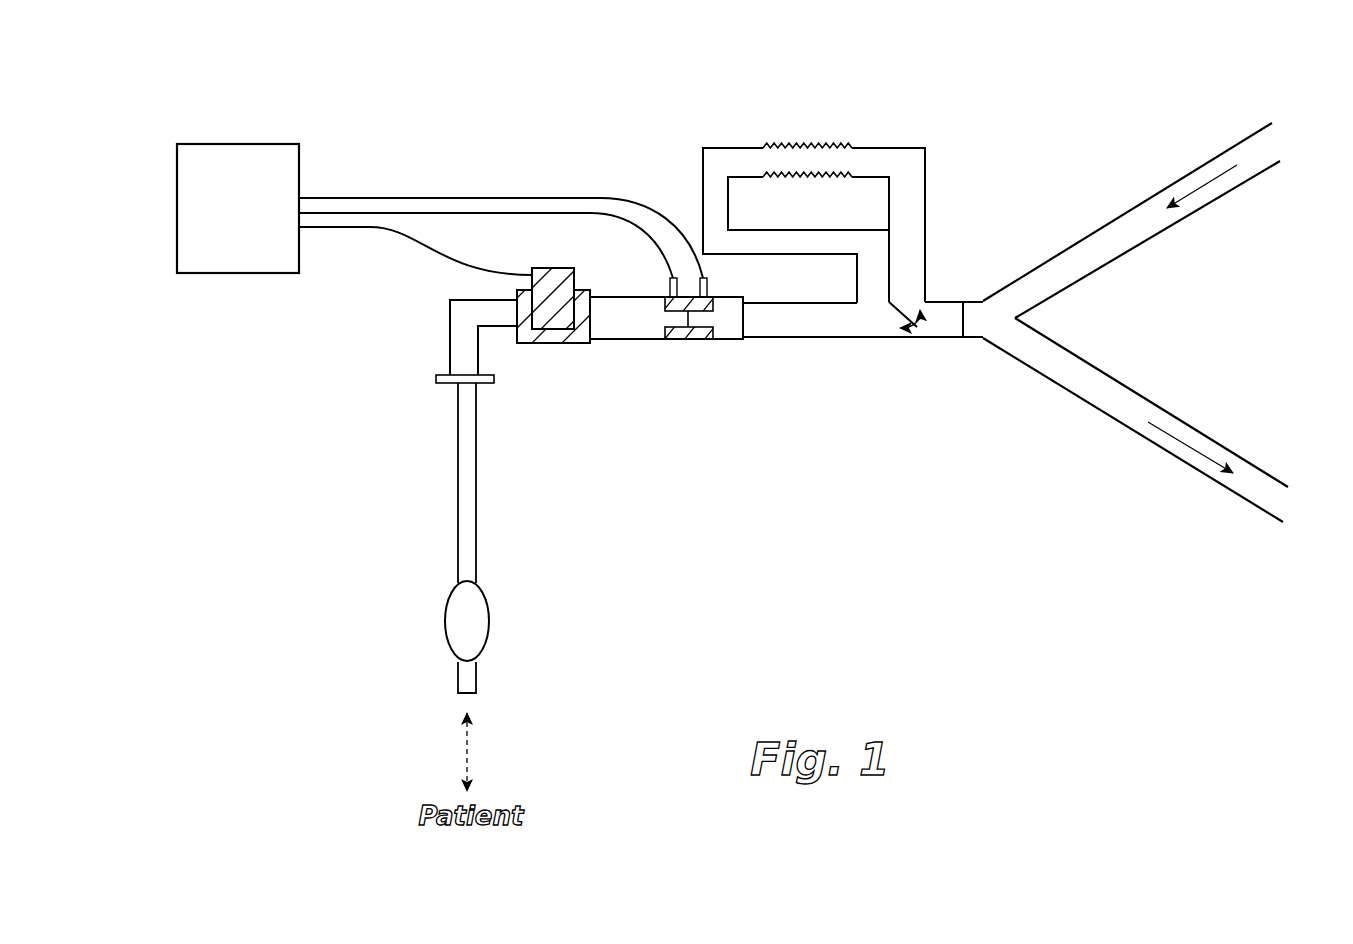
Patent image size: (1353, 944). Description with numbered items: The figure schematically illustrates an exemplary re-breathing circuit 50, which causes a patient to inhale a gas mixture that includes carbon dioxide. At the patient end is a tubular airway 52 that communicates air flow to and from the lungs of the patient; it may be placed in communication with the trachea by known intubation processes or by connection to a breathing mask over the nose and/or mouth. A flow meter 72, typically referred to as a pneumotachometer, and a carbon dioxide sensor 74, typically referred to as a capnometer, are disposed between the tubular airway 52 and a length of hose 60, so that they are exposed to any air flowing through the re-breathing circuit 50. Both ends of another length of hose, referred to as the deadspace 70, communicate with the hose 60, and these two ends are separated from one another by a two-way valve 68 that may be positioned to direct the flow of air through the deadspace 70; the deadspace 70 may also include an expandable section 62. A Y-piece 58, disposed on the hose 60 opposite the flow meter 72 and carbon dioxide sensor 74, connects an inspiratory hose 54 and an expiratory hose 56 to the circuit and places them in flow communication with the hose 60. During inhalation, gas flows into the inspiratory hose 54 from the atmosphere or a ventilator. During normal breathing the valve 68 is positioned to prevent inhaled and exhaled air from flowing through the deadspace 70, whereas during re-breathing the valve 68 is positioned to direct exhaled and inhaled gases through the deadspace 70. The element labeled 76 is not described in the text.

The re-breathing circuit 50 is at (1135, 276).
The tubular airway 52 is at (461, 507).
The inspiratory hose 54 is at (1170, 227).
The expiratory hose 56 is at (1153, 400).
The Y-piece 58 is at (970, 300).
The hose 60 is at (765, 325).
The expandable section 62 is at (805, 138).
The two-way valve 68 is at (923, 358).
The deadspace 70 is at (861, 156).
The flow meter 72 is at (682, 357).
The carbon dioxide sensor 74 is at (556, 371).
The controller 76 is at (243, 160).